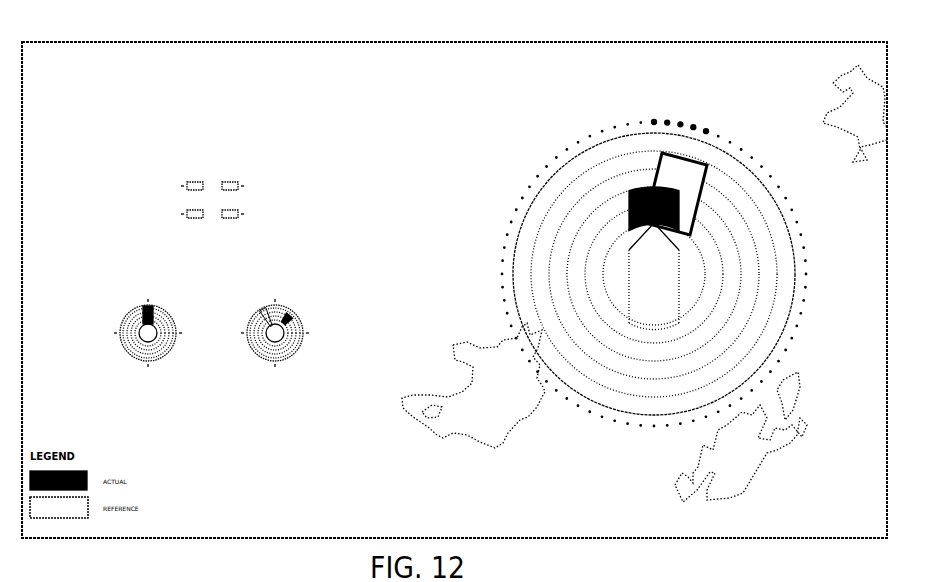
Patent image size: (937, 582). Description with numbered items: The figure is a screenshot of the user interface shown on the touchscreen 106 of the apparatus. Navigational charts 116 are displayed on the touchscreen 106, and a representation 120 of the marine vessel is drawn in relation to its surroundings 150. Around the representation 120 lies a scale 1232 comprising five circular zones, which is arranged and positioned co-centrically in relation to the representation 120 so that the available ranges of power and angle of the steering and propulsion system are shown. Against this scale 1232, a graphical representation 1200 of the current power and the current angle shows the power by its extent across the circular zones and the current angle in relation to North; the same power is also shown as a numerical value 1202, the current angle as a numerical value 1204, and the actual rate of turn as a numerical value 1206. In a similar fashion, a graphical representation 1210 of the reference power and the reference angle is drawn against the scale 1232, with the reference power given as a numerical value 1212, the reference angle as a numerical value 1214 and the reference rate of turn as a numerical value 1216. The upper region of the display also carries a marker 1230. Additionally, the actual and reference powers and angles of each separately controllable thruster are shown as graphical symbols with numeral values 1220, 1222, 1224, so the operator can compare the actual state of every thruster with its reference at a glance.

The touchscreen 106 is at (54, 42).
The navigational charts 116 is at (862, 371).
The representation of the marine vessel 120 is at (680, 283).
The surroundings 150 is at (603, 296).
The graphical representation of the current power and the current angle 1200 is at (629, 208).
The numerical value of current power 1202 is at (435, 78).
The numerical value of current angle 1204 is at (591, 78).
The numerical value of actual rate of turn 1206 is at (778, 78).
The graphical representation of the reference power and the reference angle 1210 is at (700, 194).
The numerical value of reference power 1212 is at (443, 458).
The numerical value of reference angle 1214 is at (596, 458).
The numerical value of reference rate of turn 1216 is at (783, 458).
The thruster graphical symbol with numeral values 1220 is at (98, 333).
The thruster graphical symbol with numeral values 1222 is at (327, 333).
The thruster graphical symbol with numeral values 1224 is at (133, 202).
The heading marker ring 1230 is at (648, 56).
The scale 1232 is at (504, 282).